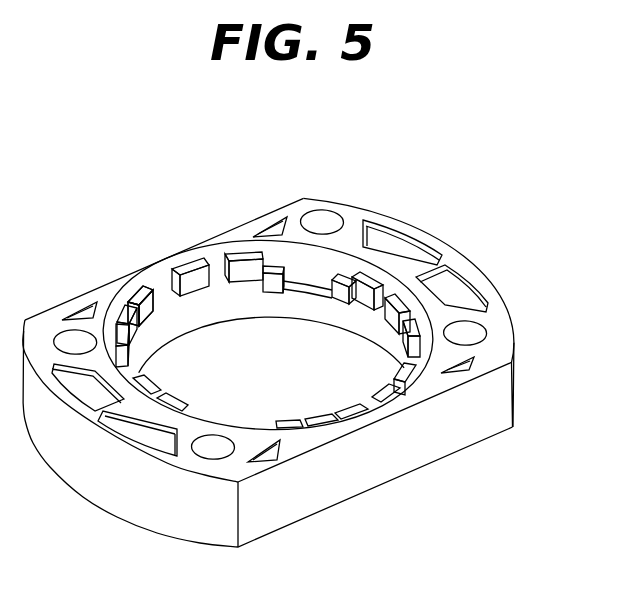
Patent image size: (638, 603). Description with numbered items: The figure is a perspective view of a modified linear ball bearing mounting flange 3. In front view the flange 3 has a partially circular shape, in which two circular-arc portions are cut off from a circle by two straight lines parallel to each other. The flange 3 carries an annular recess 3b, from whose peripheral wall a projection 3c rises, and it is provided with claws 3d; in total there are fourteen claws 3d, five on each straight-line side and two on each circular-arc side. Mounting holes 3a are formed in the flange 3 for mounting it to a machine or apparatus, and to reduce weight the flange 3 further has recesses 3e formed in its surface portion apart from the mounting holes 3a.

The flange 3 is at (227, 237).
The mounting hole 3a is at (327, 227).
The annular recess 3b is at (152, 283).
The projection of a peripheral wall 3c is at (115, 325).
The claw 3d is at (410, 313).
The recess 3e is at (140, 433).